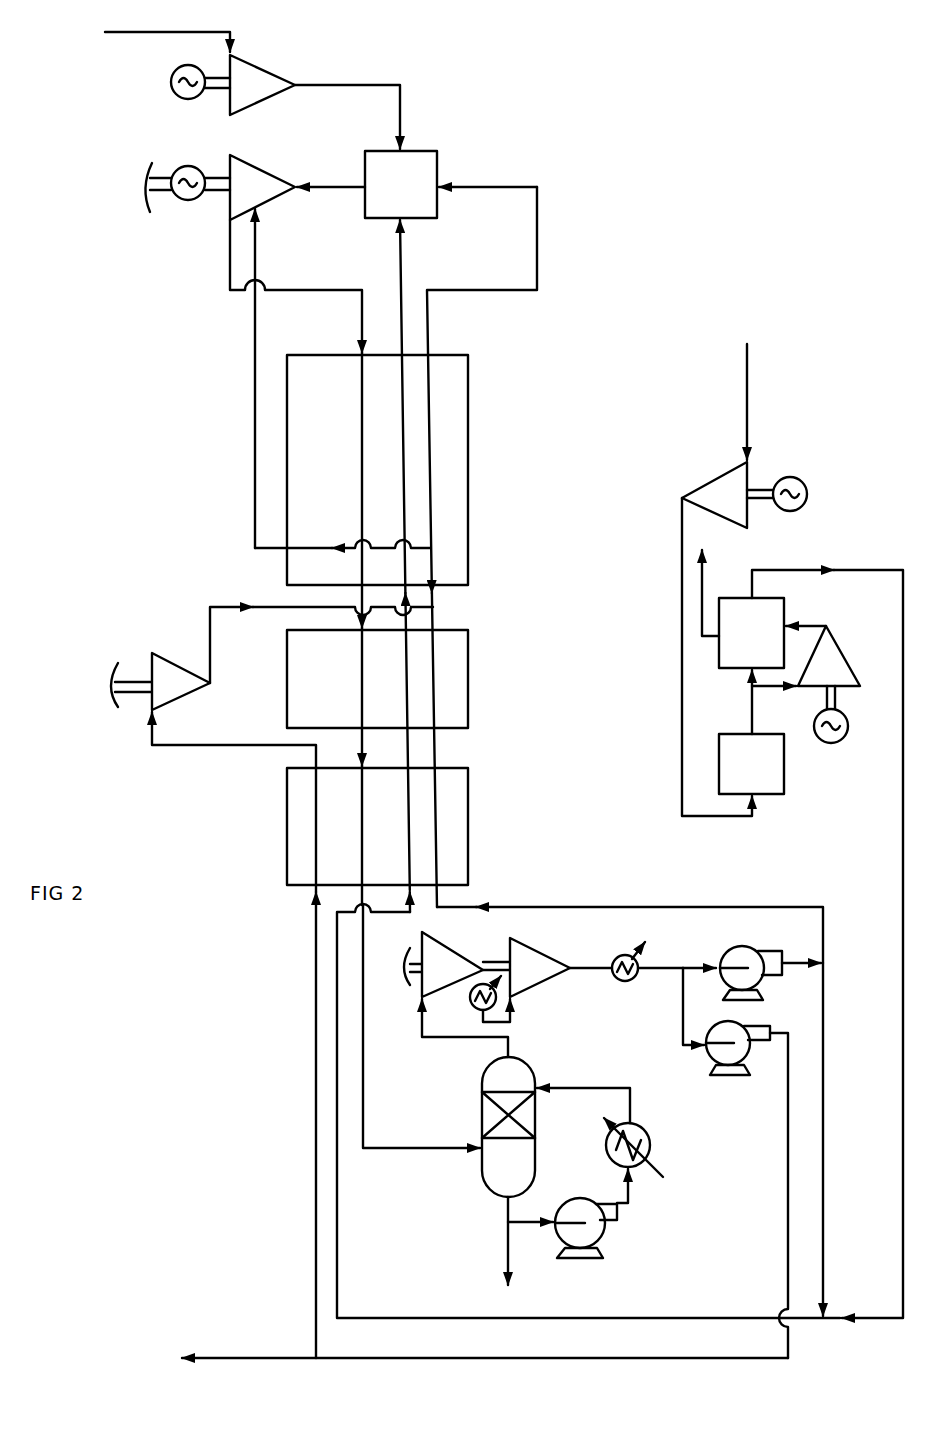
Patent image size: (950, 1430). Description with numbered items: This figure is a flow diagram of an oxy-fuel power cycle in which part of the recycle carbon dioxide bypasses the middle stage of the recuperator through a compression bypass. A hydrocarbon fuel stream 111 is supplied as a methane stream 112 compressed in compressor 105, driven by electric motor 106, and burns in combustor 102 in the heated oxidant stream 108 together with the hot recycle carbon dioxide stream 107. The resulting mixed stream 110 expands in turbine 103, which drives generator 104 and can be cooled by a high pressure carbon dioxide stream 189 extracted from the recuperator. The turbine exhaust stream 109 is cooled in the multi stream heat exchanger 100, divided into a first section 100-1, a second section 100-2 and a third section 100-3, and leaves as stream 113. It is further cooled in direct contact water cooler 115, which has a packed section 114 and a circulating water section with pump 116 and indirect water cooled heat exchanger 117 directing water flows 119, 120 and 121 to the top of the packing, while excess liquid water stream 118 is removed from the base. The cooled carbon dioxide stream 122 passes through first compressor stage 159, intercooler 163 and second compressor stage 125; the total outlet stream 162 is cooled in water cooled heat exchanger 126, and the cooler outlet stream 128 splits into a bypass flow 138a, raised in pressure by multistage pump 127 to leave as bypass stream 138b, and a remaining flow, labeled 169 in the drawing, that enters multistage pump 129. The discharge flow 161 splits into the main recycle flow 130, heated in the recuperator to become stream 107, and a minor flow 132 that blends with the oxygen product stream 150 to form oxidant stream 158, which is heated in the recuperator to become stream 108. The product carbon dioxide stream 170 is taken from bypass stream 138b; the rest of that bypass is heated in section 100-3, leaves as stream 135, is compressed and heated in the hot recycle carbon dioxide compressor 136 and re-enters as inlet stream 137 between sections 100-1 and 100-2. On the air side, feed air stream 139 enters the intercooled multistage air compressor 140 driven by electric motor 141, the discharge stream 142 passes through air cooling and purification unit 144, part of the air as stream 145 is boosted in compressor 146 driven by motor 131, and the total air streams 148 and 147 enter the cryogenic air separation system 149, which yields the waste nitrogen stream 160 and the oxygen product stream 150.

The recuperator heat exchanger 100 is at (435, 620).
The first section 100-1 is at (377, 470).
The second section 100-2 is at (377, 679).
The third section 100-3 is at (410, 826).
The combustor 102 is at (401, 184).
The turbine 103 is at (262, 187).
The generator 104 is at (187, 178).
The compressor 105 is at (262, 85).
The electric motor 106 is at (175, 82).
The carbon dioxide stream 107 is at (504, 547).
The oxidant stream 108 is at (422, 566).
The turbine exhaust stream 109 is at (296, 562).
The mixed stream 110 is at (331, 175).
The hydrocarbon fuel stream 111 is at (167, 31).
The methane stream 112 is at (347, 105).
The cooled turbine exhaust stream 113 is at (421, 1026).
The packed section 114 is at (508, 1115).
The direct contact water cooler 115 is at (508, 1127).
The pump 116 is at (600, 1228).
The indirect water cooled heat exchanger 117 is at (645, 1143).
The excess liquid water stream 118 is at (484, 1253).
The water flow 119 is at (506, 1209).
The water flow 120 is at (646, 1186).
The water flow 121 is at (583, 1094).
The cooled carbon dioxide stream 122 is at (486, 1028).
The second compressor stage 125 is at (526, 967).
The water cooled heat exchanger 126 is at (621, 957).
The multistage pump 127 is at (747, 1048).
The cooler outlet stream 128 is at (660, 980).
The multistage pump 129 is at (762, 973).
The main high pressure carbon dioxide recycle flow 130 is at (630, 924).
The electric motor or other device 131 is at (845, 728).
The minor flow 132 is at (846, 1139).
The recycle high pressure carbon dioxide flow stream 135 is at (234, 1035).
The hot recycle carbon dioxide compressor 136 is at (160, 681).
The inlet stream 137 is at (321, 634).
The bypass carbon dioxide flow 138a is at (674, 1006).
The bypass stream 138b is at (774, 1195).
The feed air stream 139 is at (770, 402).
The intercooled multistage air compressor 140 is at (714, 495).
The electric motor 141 is at (790, 503).
The discharge stream 142 is at (701, 657).
The air cooling and purification unit 144 is at (751, 764).
The air stream 145 is at (774, 697).
The compressor 146 is at (829, 656).
The air stream 147 is at (811, 614).
The air stream 148 is at (727, 702).
The air separation cryogenic system 149 is at (751, 633).
The oxygen product stream 150 is at (827, 932).
The oxidant stream 158 is at (588, 1111).
The first compressor stage 159 is at (443, 964).
The waste nitrogen stream 160 is at (724, 590).
The discharge flow 161 is at (804, 951).
The total outlet stream 162 is at (591, 980).
The intercooler 163 is at (475, 999).
The stream 169 is at (704, 956).
The product carbon dioxide stream 170 is at (485, 1345).
The cooling high pressure carbon dioxide stream 189 is at (316, 378).